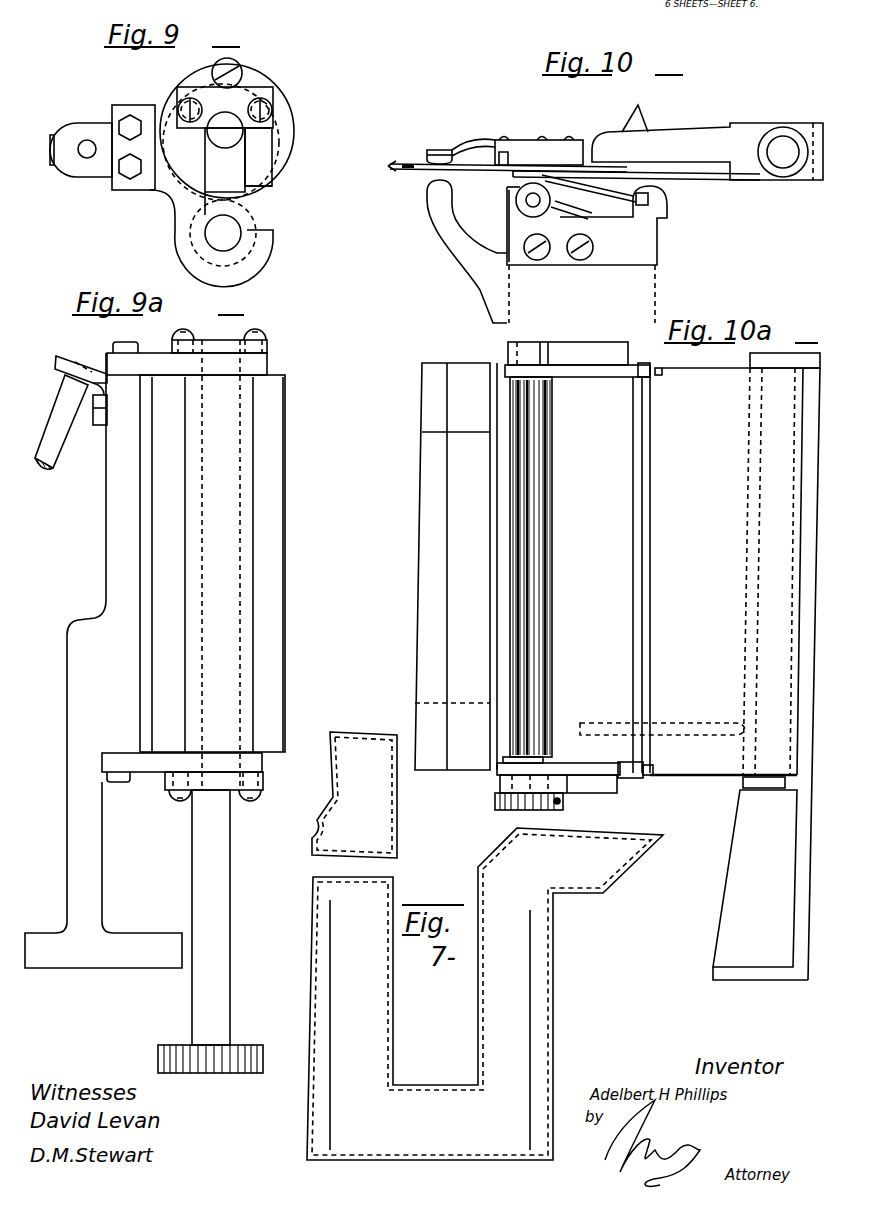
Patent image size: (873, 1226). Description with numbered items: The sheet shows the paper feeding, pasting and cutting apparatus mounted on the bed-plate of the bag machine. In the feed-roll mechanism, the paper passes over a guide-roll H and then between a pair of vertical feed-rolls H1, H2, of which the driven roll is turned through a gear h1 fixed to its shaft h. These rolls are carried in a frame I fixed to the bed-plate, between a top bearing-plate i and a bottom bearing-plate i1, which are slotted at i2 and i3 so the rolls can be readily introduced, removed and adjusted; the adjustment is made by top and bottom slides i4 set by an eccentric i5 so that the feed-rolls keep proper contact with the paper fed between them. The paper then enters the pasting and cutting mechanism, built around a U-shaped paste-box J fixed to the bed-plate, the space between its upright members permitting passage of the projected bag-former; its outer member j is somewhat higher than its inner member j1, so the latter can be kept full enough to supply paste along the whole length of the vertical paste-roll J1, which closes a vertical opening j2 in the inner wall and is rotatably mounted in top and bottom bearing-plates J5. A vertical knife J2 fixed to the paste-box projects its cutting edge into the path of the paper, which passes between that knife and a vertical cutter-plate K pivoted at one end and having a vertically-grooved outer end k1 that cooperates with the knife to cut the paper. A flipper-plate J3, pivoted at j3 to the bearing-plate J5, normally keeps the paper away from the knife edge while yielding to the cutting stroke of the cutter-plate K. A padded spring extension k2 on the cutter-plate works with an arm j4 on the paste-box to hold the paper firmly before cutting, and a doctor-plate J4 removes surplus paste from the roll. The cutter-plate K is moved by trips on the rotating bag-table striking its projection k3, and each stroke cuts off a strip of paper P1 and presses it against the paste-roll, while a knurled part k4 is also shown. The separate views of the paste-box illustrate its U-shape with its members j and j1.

In FIG. 9, the guide-roll H is at (87, 140).
In FIG. 9A, the guide-roll H is at (71, 413).
In FIG. 9, the feed-roll H1 is at (294, 143).
In FIG. 9A, the feed-roll H1 is at (280, 536).
In FIG. 9, the feed-roll H2 is at (250, 220).
In FIG. 9A, the feed-roll H2 is at (243, 611).
In FIG. 9, the frame I is at (152, 182).
In FIG. 9A, the frame I is at (103, 655).
In FIG. 9A, the top bearing-plate i is at (270, 366).
In FIG. 9A, the bottom bearing-plate i1 is at (264, 767).
In FIG. 9, the slot i2 is at (238, 163).
In FIG. 9, the slot i3 is at (262, 191).
In FIG. 9, the slide i4 is at (256, 94).
In FIG. 9A, the slide i4 is at (268, 346).
In FIG. 9, the eccentric i5 is at (238, 62).
In FIG. 9A, the shaft h is at (211, 917).
In FIG. 9A, the gear h1 is at (254, 1052).
In FIG. 10, the paste-box J is at (660, 282).
In FIG. 7, the paste-box J is at (496, 1000).
In FIG. 10, the paste-roll J1 is at (536, 200).
In FIG. 10A, the paste-roll J1 is at (545, 578).
In FIG. 10, the knife J2 is at (506, 198).
In FIG. 10, the flipper-plate J3 is at (538, 174).
In FIG. 10A, the flipper-plate J3 is at (596, 808).
In FIG. 10, the doctor-plate J4 is at (589, 197).
In FIG. 10, the bearing-plate J5 is at (600, 238).
In FIG. 10A, the bearing-plate J5 is at (618, 368).
In FIG. 7, the outer member j is at (520, 1030).
In FIG. 7, the inner member j1 is at (338, 1025).
In FIG. 7, the opening j2 is at (315, 843).
In FIG. 10, the pivot j3 is at (650, 203).
In FIG. 10A, the pivot j3 is at (645, 512).
In FIG. 10, the arm j4 is at (437, 190).
In FIG. 10, the cutter-plate K is at (643, 166).
In FIG. 10A, the cutter-plate K is at (700, 666).
In FIG. 10, the grooved outer end k1 is at (525, 151).
In FIG. 10, the padded spring extension k2 is at (437, 149).
In FIG. 10A, the padded spring extension k2 is at (422, 432).
In FIG. 10, the projection k3 is at (647, 121).
In FIG. 10A, the knurled nut k4 is at (494, 801).
In FIG. 10, the strip of paper P1 is at (406, 171).